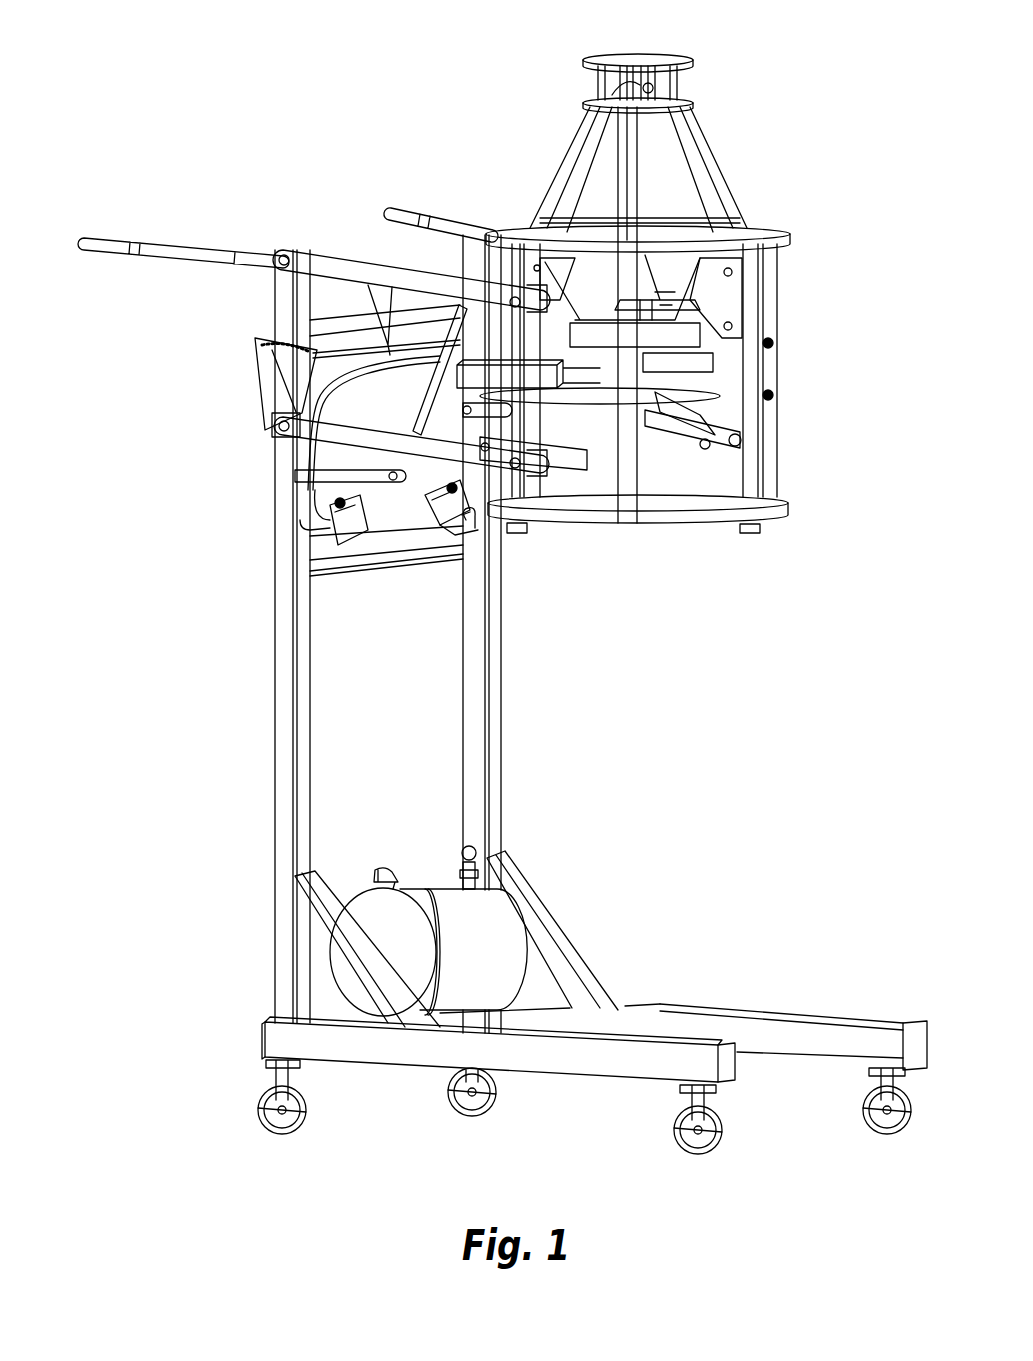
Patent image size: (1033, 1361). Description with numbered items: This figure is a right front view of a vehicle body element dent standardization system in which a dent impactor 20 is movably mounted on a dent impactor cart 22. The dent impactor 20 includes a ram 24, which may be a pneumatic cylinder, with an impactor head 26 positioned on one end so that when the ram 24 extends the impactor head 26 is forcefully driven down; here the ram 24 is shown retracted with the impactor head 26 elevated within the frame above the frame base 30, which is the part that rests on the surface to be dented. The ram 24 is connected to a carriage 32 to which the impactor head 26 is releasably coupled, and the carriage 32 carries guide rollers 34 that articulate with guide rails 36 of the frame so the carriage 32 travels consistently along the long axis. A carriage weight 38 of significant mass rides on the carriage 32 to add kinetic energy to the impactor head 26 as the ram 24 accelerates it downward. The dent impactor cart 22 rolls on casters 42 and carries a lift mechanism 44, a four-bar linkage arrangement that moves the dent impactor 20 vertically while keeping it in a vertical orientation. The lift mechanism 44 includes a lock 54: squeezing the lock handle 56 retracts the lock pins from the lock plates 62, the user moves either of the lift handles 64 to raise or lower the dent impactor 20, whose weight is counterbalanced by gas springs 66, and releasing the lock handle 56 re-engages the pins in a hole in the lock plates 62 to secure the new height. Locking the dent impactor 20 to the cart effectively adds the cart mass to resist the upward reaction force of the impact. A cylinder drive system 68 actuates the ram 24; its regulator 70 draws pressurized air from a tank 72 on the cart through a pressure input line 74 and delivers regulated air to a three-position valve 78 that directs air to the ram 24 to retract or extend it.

The dent impactor 20 is at (510, 125).
The dent impactor cart 22 is at (575, 705).
The ram 24 is at (650, 185).
The impactor head 26 is at (740, 448).
The frame base 30 is at (730, 548).
The carriage 32 is at (748, 302).
The guide rollers 34 is at (742, 332).
The guide rails 36 is at (455, 260).
The carriage weight 38 is at (678, 340).
The casters 42 is at (280, 1125).
The lift mechanism 44 is at (162, 228).
The lock 54 is at (245, 395).
The lock handle 56 is at (355, 302).
The lock plates 62 is at (270, 372).
The lift handles 64 is at (425, 213).
The gas springs 66 is at (425, 397).
The cylinder drive system 68 is at (385, 543).
The regulator 70 is at (440, 500).
The tank 72 is at (490, 910).
The pressure input line 74 is at (475, 520).
The valve 78 is at (344, 523).